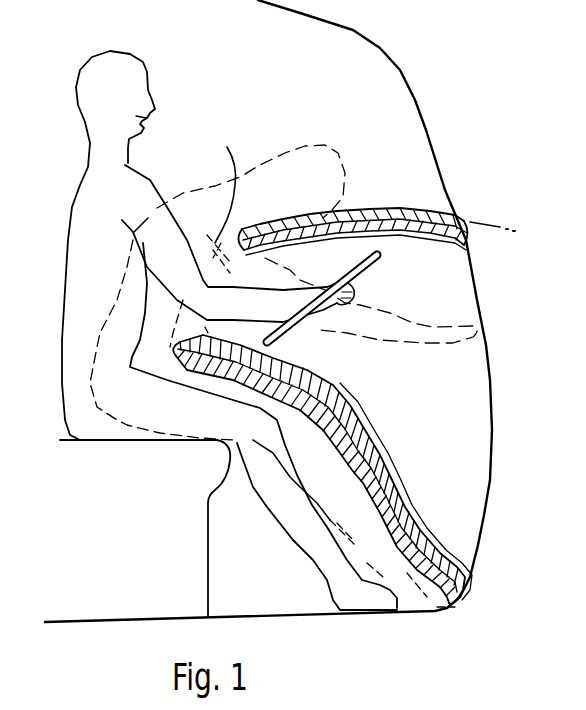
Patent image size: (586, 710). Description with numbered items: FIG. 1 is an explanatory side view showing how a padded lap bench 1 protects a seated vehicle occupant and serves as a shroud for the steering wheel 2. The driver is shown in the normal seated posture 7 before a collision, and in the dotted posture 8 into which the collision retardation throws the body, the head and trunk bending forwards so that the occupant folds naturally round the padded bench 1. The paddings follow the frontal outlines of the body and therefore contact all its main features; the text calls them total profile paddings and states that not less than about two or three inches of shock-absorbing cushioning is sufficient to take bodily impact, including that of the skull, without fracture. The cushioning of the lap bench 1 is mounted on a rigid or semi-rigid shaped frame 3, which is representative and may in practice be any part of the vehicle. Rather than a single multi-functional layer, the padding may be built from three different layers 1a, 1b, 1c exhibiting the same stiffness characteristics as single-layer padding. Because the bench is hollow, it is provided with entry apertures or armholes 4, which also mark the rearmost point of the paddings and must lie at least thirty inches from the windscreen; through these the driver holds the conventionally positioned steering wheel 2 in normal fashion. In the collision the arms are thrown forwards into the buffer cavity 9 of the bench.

The padded lap bench 1 is at (378, 200).
The first padding layer 1a is at (411, 215).
The second padding layer 1b is at (436, 230).
The third padding layer 1c is at (433, 243).
The steering wheel 2 is at (378, 265).
The frame 3 is at (465, 247).
The entry apertures or armholes 4 is at (251, 181).
The normal posture of the driver 7 is at (68, 212).
The collision posture 8 is at (205, 227).
The buffer cavity 9 is at (452, 441).